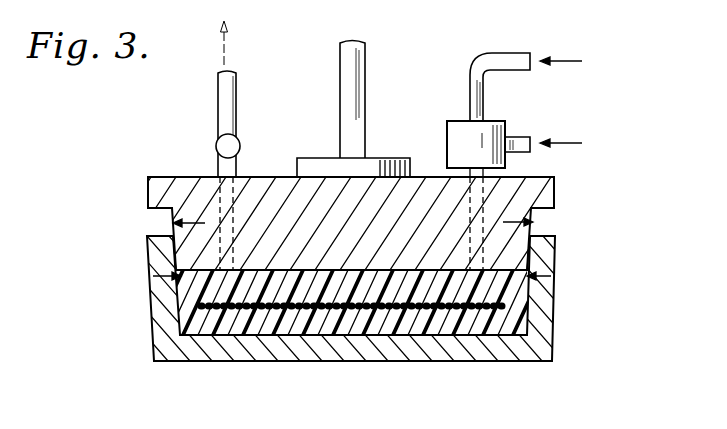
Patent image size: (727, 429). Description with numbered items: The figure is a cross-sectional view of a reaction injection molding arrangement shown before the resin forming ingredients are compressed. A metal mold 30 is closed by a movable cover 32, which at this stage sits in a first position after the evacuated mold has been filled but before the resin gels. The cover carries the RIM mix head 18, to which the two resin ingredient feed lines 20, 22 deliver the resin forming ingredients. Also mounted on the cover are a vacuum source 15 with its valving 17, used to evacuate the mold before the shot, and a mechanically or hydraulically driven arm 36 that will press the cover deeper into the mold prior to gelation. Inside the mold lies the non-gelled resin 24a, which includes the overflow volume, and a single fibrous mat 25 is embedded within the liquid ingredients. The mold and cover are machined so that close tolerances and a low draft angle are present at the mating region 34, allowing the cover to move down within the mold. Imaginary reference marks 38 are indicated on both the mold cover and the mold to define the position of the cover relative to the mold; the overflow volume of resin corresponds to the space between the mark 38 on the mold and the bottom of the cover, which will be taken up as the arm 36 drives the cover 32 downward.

The vacuum source 15 is at (236, 90).
The valving 17 is at (216, 144).
The RIM mix head 18 is at (456, 121).
The resin ingredient feed line 20 is at (515, 52).
The resin ingredient feed line 22 is at (520, 137).
The resin 24a is at (473, 312).
The fibrous mat 25 is at (240, 312).
The metal mold 30 is at (555, 330).
The movable cover 32 is at (555, 197).
The close tolerances and low draft angle 34 is at (170, 243).
The mechanically or hydraulically driven arm 36 is at (365, 64).
The imaginary reference marks 38 is at (188, 218).